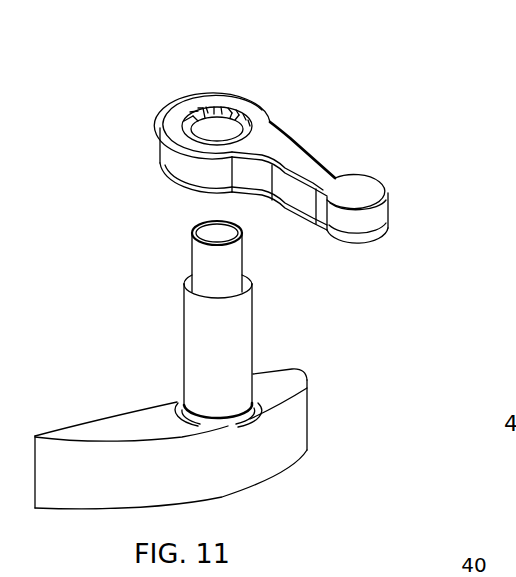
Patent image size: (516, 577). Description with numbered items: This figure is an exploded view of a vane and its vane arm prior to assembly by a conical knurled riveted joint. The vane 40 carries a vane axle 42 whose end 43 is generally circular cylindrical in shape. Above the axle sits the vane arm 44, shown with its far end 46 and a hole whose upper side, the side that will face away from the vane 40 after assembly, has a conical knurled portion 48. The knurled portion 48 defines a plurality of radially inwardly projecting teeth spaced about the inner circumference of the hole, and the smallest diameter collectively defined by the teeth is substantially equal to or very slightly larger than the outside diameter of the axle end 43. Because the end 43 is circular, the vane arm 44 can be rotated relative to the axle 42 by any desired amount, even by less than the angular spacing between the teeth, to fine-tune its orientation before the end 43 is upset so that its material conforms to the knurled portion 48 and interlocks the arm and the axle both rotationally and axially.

The vane 40 is at (125, 432).
The vane axle 42 is at (205, 347).
The end of the vane axle 43 is at (202, 265).
The vane arm 44 is at (300, 167).
The lever arm end 46 is at (360, 193).
The conical knurled portion 48 is at (235, 118).